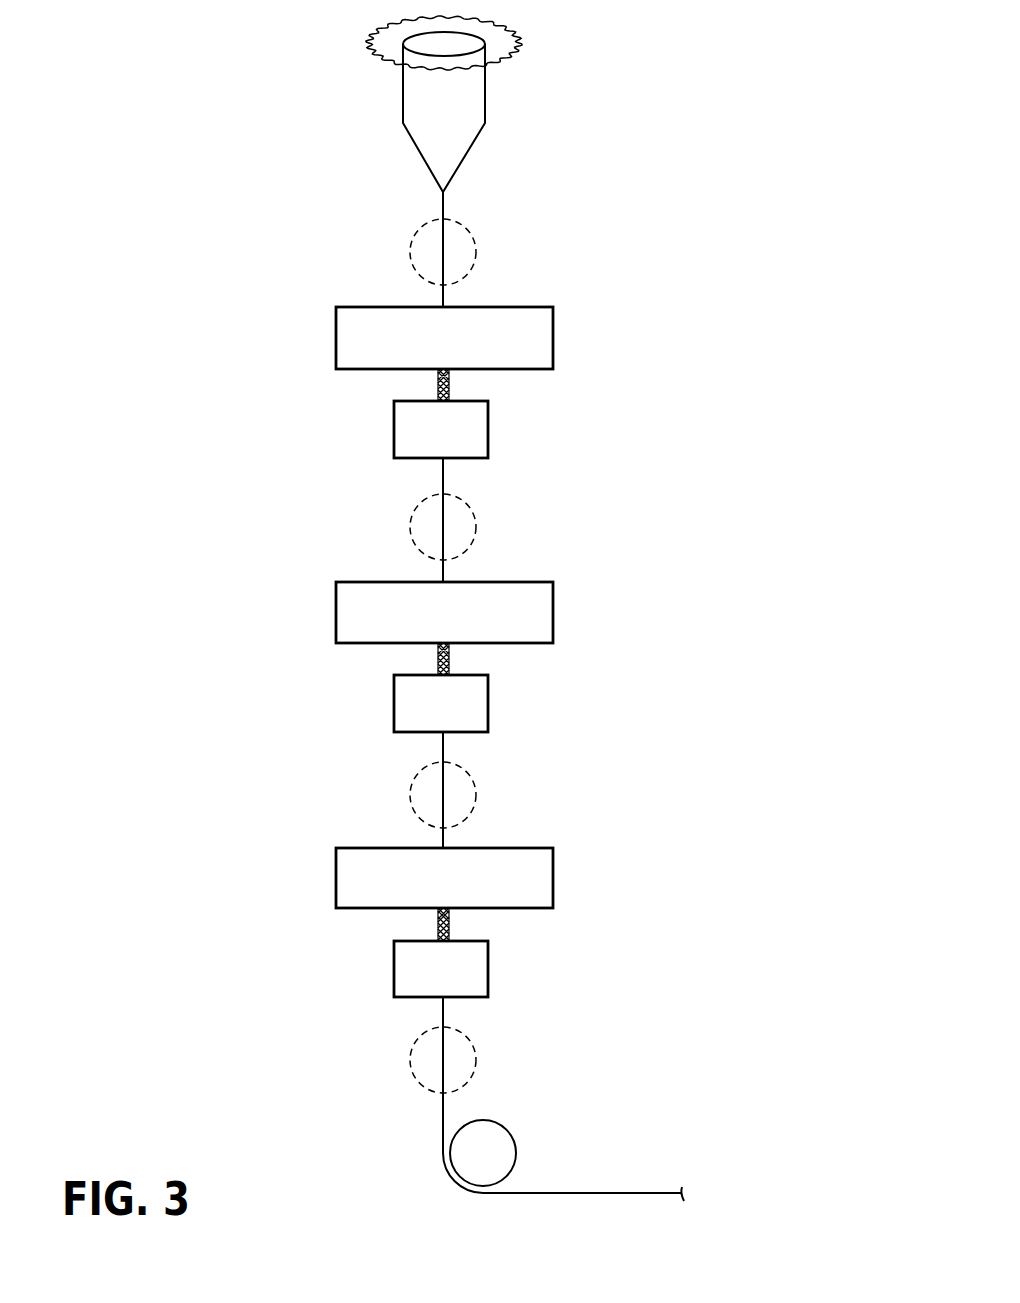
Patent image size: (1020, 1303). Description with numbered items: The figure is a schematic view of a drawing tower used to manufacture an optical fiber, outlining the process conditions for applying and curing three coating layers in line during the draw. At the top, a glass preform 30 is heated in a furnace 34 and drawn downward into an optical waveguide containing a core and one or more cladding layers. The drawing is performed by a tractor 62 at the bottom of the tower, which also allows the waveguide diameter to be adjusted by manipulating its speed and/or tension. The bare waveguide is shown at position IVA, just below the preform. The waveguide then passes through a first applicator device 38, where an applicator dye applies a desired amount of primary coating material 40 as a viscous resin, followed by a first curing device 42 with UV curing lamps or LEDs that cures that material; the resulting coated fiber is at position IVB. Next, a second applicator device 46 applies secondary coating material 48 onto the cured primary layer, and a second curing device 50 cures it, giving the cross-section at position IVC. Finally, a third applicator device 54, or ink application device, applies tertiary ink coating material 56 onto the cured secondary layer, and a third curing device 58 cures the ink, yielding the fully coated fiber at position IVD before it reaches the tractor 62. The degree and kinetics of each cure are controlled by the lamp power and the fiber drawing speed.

The glass preform 30 is at (415, 93).
The furnace 34 is at (521, 45).
The first applicator device 38 is at (544, 334).
The primary coating material 40 is at (438, 379).
The first curing device 42 is at (480, 424).
The second applicator device 46 is at (544, 608).
The secondary coating material 48 is at (438, 655).
The second curing device 50 is at (480, 698).
The third applicator device 54 is at (544, 877).
The tertiary ink coating material 56 is at (438, 922).
The third curing device 58 is at (480, 968).
The tractor 62 is at (508, 1142).
The position IV A IVA is at (412, 256).
The position IV B IVB is at (412, 532).
The position IV C IVC is at (412, 800).
The position IV D IVD is at (412, 1065).